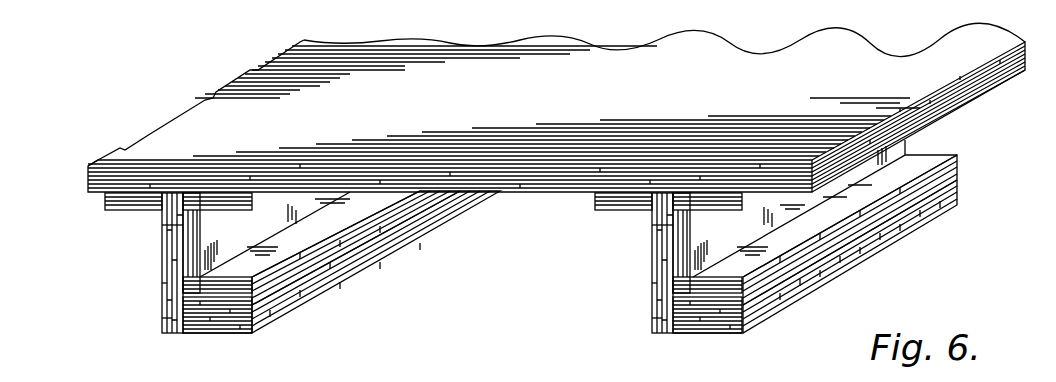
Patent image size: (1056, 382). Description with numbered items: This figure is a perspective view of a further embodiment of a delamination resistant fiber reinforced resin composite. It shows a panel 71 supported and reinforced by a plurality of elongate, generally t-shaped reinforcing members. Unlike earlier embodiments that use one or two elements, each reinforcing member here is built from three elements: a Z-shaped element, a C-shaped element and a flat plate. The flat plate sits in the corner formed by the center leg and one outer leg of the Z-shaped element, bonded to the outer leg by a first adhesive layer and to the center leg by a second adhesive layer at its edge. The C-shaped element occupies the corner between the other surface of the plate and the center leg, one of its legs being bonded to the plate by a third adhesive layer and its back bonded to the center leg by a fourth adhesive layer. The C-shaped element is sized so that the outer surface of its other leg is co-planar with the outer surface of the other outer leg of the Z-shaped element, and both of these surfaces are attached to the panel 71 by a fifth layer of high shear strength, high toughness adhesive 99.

The panel 71 is at (540, 110).
The fifth layer of adhesive 99 is at (105, 163).